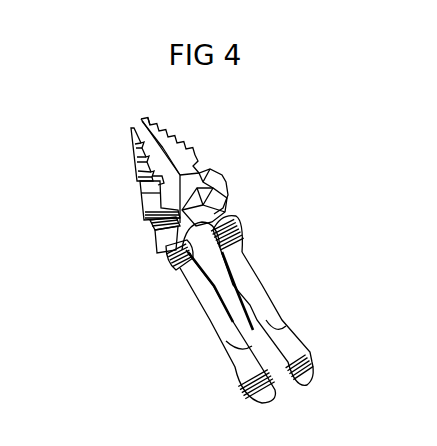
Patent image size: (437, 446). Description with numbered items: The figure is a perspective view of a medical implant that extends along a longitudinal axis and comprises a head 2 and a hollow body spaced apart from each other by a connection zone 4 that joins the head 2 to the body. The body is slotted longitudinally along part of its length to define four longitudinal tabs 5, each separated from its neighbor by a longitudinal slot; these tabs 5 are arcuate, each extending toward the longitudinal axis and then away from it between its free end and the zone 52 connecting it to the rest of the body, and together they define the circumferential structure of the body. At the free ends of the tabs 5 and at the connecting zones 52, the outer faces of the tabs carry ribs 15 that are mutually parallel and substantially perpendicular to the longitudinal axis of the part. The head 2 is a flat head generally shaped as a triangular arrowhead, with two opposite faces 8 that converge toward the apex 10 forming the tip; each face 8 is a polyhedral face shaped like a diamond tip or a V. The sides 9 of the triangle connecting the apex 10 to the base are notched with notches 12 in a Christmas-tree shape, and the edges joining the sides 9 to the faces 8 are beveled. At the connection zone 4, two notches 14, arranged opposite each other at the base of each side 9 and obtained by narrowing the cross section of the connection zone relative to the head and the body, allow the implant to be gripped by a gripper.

The head 2 is at (188, 161).
The connection zone 4 is at (184, 187).
The longitudinal tab 5 is at (270, 298).
The face 8 is at (152, 180).
The side 9 is at (132, 170).
The apex 10 is at (141, 119).
The notches 12 is at (181, 142).
The notches 14 is at (152, 228).
The ribs 15 is at (243, 231).
The zone for connecting the tab 52 is at (230, 212).